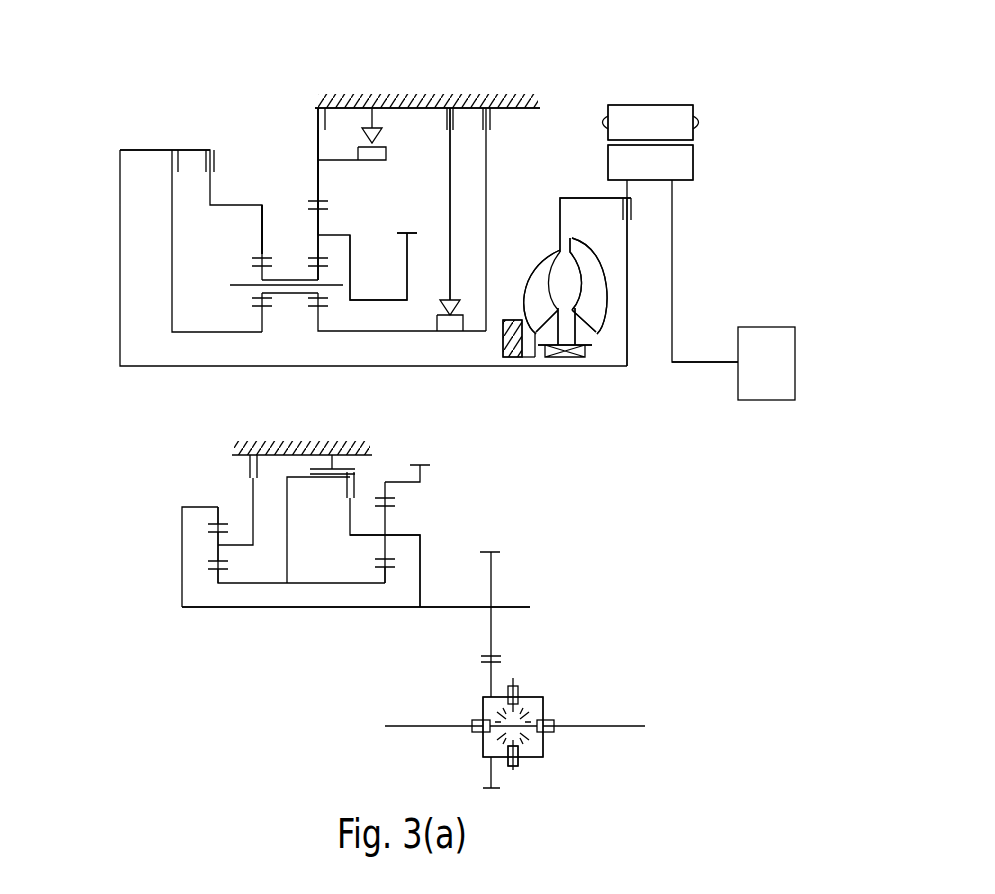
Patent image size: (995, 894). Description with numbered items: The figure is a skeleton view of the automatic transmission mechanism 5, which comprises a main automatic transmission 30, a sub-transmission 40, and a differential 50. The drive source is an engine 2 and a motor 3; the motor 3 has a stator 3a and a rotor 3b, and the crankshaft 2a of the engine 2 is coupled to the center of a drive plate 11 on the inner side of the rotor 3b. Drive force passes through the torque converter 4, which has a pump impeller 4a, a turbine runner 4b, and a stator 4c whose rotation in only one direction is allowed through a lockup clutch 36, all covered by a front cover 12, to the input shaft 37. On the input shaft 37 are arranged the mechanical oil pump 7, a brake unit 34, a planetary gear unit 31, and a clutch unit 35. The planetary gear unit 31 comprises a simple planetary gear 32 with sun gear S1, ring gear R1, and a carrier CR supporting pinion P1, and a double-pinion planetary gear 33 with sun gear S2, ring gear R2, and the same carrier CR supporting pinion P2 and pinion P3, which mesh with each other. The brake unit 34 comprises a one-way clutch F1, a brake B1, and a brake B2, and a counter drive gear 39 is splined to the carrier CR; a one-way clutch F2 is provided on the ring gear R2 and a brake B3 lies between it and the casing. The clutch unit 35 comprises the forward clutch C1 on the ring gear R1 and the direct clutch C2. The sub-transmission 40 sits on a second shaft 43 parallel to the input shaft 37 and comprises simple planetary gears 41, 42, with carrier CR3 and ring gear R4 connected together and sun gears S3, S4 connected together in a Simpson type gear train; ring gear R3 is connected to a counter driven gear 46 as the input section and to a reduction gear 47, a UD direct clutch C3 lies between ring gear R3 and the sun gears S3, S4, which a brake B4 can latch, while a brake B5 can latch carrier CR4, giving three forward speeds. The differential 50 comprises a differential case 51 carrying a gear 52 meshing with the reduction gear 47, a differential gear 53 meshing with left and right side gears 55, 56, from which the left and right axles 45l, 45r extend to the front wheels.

The engine 2 is at (780, 327).
The crankshaft 2a is at (715, 362).
The motor/generator 3 is at (682, 105).
The stator 3a is at (698, 122).
The rotor 3b is at (687, 160).
The torque converter 4 is at (537, 211).
The pump impeller 4a is at (541, 262).
The turbine runner 4b is at (578, 245).
The stator 4c is at (571, 330).
The automatic transmission mechanism 5 is at (384, 48).
The mechanical oil pump 7 is at (502, 346).
The drive plate 11 is at (675, 218).
The front cover 12 is at (584, 198).
The main automatic transmission 30 is at (100, 258).
The planetary gear unit 31 is at (206, 50).
The simple planetary gear 32 is at (260, 194).
The double-pinion planetary gear 33 is at (305, 194).
The brake unit 34 is at (495, 41).
The clutch unit 35 is at (145, 124).
The lockup clutch 36 is at (628, 220).
The input shaft 37 is at (505, 366).
The counter drive gear 39 is at (415, 247).
The sub-transmission 40 is at (90, 542).
The simple planetary gear 41 is at (431, 497).
The simple planetary gear 42 is at (185, 499).
The second shaft 43 is at (298, 608).
The counter driven gear 46 is at (427, 466).
The reduction gear 47 is at (493, 562).
The differential 50 is at (562, 680).
The differential case 51 is at (545, 747).
The gear 52 is at (486, 668).
The differential gear 53 is at (518, 738).
The left side gear 55 is at (500, 722).
The right side gear 56 is at (545, 717).
The left axle 45l is at (395, 728).
The right axle 45r is at (632, 728).
The brake B1 is at (492, 118).
The brake B2 is at (448, 122).
The brake B3 is at (318, 128).
The brake B4 is at (355, 458).
The brake B5 is at (248, 470).
The forward clutch C1 is at (214, 163).
The direct clutch C2 is at (172, 160).
The UD direct clutch C3 is at (336, 490).
The one-way clutch F1 is at (440, 318).
The one-way clutch F2 is at (375, 131).
The ring gear R1 is at (258, 256).
The ring gear R2 is at (323, 203).
The ring gear R3 is at (382, 492).
The ring gear R4 is at (208, 527).
The pinion P1 is at (262, 280).
The pinion P2 is at (305, 270).
The pinion P3 is at (318, 213).
The sun gear S1 is at (272, 335).
The sun gear S2 is at (311, 335).
The sun gear S3 is at (380, 566).
The sun gear S4 is at (208, 582).
The carrier CR is at (351, 266).
The carrier CR3 is at (421, 550).
The carrier CR4 is at (211, 538).